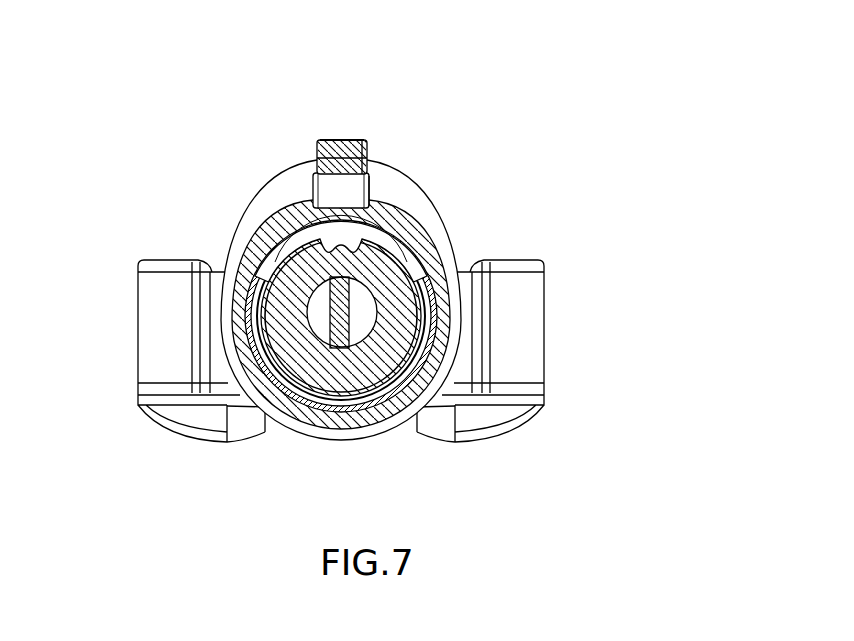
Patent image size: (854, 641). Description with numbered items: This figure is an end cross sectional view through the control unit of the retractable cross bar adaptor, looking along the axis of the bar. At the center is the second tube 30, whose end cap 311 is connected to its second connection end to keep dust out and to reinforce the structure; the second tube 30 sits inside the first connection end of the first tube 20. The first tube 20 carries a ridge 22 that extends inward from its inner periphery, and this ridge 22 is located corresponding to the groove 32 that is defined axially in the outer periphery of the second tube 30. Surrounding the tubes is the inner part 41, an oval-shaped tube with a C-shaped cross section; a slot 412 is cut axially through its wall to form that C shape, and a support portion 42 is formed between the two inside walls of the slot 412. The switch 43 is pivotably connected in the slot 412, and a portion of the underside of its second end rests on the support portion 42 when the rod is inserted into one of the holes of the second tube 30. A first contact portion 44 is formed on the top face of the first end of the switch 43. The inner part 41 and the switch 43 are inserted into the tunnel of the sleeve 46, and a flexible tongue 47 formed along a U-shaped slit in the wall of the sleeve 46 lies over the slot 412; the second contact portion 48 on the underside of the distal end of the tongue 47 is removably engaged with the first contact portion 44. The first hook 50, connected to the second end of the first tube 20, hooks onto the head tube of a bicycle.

The first tube 20 is at (227, 303).
The ridge 22 is at (310, 192).
The second tube 30 is at (230, 350).
The end cap 311 is at (385, 292).
The groove 32 is at (336, 220).
The inner part 41 is at (237, 260).
The slot 412 is at (345, 190).
The support portion 42 is at (372, 191).
The switch 43 is at (320, 147).
The first contact portion 44 is at (402, 105).
The second contact portion 48 is at (362, 140).
The sleeve 46 is at (250, 238).
The tongue 47 is at (336, 141).
The first hook 50 is at (533, 313).